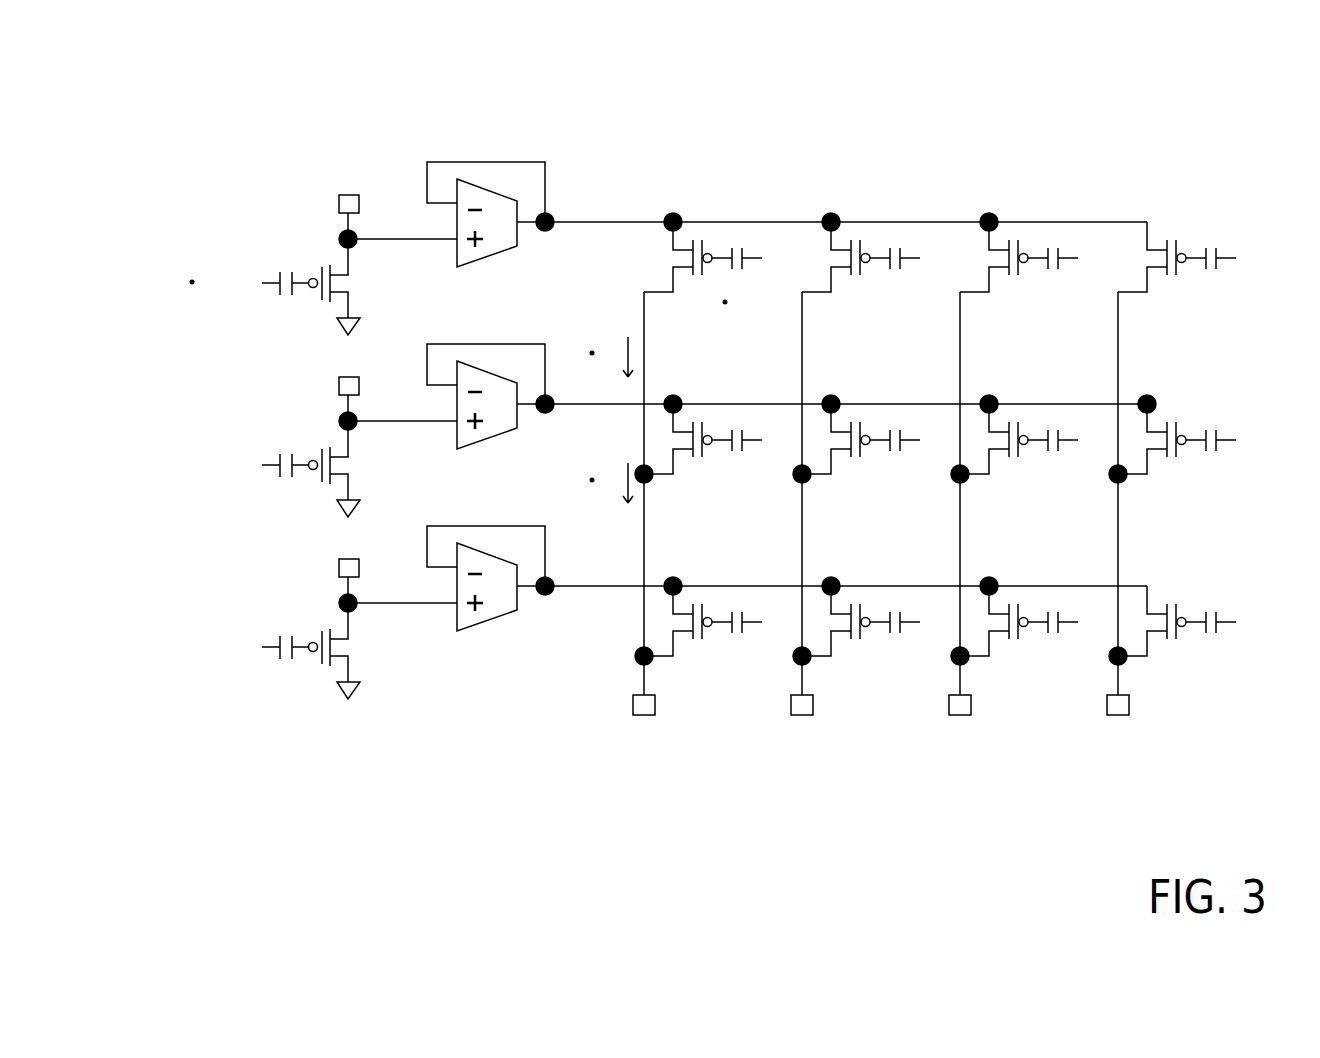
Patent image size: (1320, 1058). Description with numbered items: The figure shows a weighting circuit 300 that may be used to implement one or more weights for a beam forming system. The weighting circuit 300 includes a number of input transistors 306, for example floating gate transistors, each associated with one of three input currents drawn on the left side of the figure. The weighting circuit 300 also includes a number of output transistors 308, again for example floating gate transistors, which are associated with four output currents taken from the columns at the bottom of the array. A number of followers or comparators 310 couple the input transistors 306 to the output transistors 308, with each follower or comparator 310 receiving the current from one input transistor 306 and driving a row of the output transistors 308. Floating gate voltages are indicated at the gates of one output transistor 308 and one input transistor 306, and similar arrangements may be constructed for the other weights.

The weighting circuit 300 is at (192, 114).
The input transistor 306 is at (320, 258).
The output transistor 308 is at (698, 233).
The follower or comparator 310 is at (493, 243).